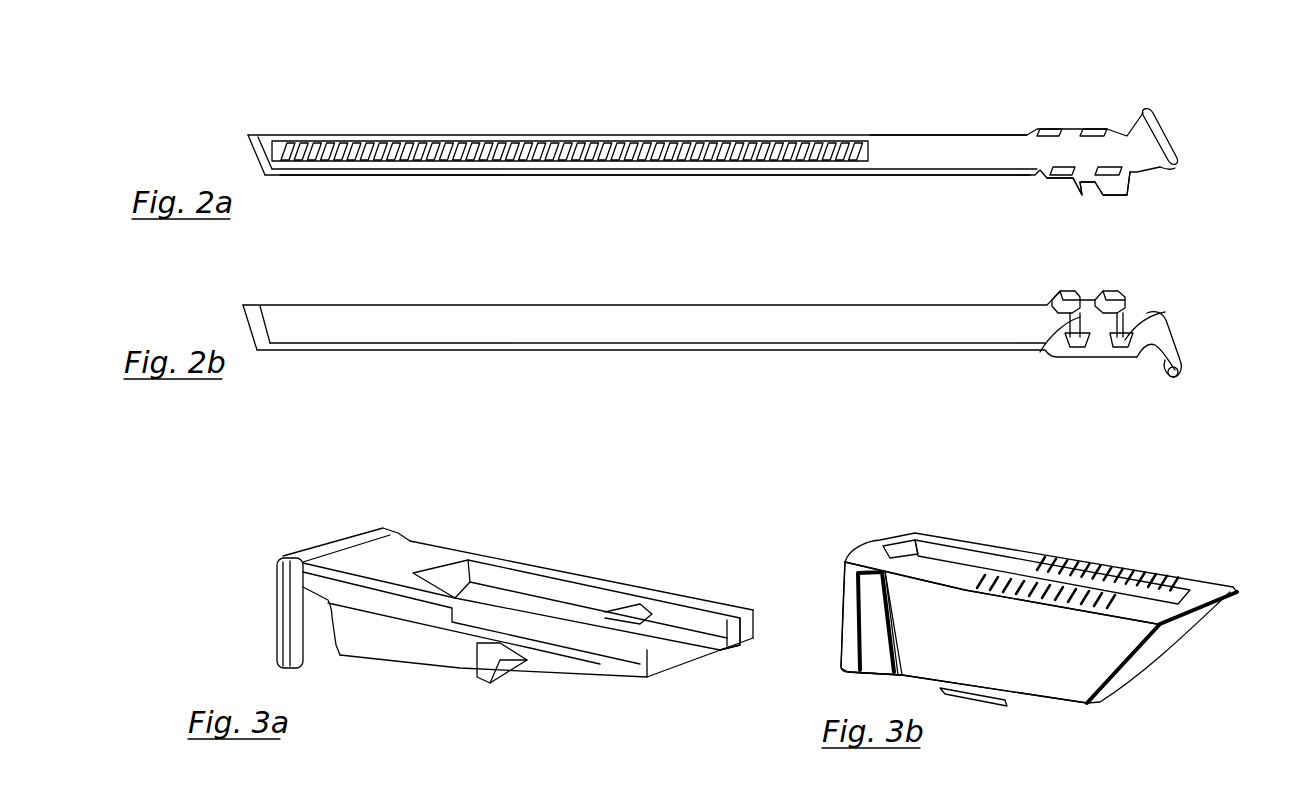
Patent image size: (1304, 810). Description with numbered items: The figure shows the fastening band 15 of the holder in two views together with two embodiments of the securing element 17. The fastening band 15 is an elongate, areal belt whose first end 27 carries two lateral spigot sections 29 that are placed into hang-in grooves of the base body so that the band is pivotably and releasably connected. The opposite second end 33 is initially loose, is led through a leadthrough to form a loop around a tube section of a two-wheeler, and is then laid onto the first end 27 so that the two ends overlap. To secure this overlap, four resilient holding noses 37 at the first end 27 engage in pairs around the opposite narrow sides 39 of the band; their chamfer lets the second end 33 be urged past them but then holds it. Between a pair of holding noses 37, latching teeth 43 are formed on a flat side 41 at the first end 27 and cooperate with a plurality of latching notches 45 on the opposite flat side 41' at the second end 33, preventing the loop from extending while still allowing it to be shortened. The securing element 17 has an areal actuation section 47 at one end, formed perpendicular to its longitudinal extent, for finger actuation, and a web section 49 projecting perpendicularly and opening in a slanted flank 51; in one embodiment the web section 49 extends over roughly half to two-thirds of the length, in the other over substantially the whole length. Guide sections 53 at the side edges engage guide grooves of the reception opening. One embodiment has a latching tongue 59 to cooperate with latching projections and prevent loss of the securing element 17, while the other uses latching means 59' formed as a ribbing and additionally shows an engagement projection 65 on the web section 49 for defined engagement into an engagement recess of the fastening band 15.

In FIG. 2A, the fastening band 15 is at (726, 100).
In FIG. 2B, the fastening band 15 is at (690, 300).
In FIG. 2A, the second end 33 is at (378, 96).
In FIG. 2B, the second end 33 is at (398, 282).
In FIG. 2A, the latching notches 45 is at (495, 98).
In FIG. 2B, the flat side 41 is at (651, 285).
In FIG. 2A, the opposite flat side 41' is at (941, 104).
In FIG. 2A, the narrow sides 39 is at (898, 172).
In FIG. 2B, the narrow sides 39 is at (884, 348).
In FIG. 2A, the first end 27 is at (1090, 108).
In FIG. 2B, the first end 27 is at (1135, 285).
In FIG. 2A, the spigot sections 29 is at (1150, 124).
In FIG. 2B, the spigot sections 29 is at (1178, 370).
In FIG. 2A, the holding noses 37 is at (1108, 185).
In FIG. 2B, the holding noses 37 is at (1062, 290).
In FIG. 2B, the latching teeth 43 is at (1122, 322).
In FIG. 3A, the securing element 17 is at (536, 583).
In FIG. 3B, the securing element 17 is at (1155, 525).
In FIG. 3A, the actuation section 47 is at (277, 620).
In FIG. 3B, the actuation section 47 is at (848, 628).
In FIG. 3A, the web section 49 is at (455, 665).
In FIG. 3B, the web section 49 is at (1020, 672).
In FIG. 3A, the slanted flank 51 is at (518, 658).
In FIG. 3B, the slanted flank 51 is at (1140, 652).
In FIG. 3A, the guide sections 53 is at (708, 602).
In FIG. 3B, the guide sections 53 is at (918, 570).
In FIG. 3A, the latching tongue 59 is at (576, 578).
In FIG. 3B, the latching means 59' is at (1077, 554).
In FIG. 3B, the engagement projection 65 is at (990, 705).